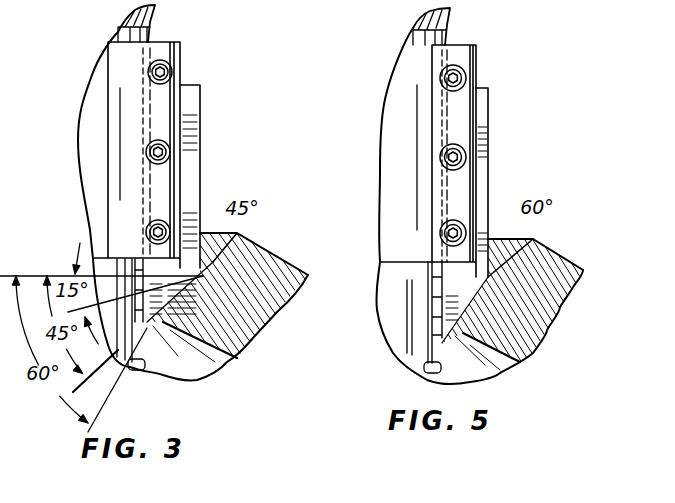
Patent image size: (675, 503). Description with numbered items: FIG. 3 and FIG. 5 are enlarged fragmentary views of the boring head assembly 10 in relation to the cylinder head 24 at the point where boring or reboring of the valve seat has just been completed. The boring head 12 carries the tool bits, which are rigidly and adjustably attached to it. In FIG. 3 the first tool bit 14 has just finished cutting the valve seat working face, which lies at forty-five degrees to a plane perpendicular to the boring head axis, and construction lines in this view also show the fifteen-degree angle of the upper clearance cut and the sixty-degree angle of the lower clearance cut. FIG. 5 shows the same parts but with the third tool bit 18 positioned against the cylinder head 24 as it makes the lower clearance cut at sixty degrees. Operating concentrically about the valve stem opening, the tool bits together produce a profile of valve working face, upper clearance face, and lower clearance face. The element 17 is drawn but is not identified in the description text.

In FIG. 3, the tool holder 10 is at (193, 68).
In FIG. 5, the tool holder 10 is at (497, 90).
In FIG. 3, the shank / base 12 is at (105, 77).
In FIG. 5, the shank / base 12 is at (407, 68).
In FIG. 3, the 45 degree guide rail 14 is at (193, 137).
In FIG. 3, the cutting insert 17 is at (240, 342).
In FIG. 5, the cutting insert 17 is at (527, 353).
In FIG. 5, the 60 degree guide rail 18 is at (484, 165).
In FIG. 3, the workpiece 24 is at (263, 263).
In FIG. 5, the workpiece 24 is at (547, 270).